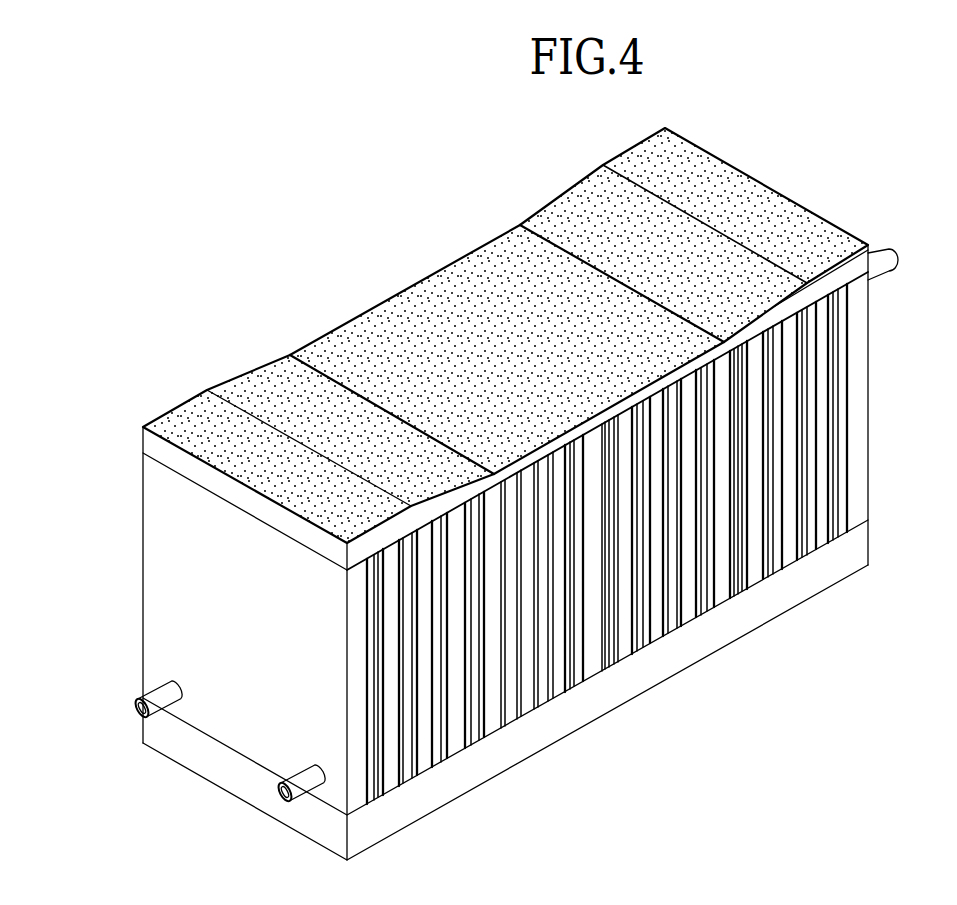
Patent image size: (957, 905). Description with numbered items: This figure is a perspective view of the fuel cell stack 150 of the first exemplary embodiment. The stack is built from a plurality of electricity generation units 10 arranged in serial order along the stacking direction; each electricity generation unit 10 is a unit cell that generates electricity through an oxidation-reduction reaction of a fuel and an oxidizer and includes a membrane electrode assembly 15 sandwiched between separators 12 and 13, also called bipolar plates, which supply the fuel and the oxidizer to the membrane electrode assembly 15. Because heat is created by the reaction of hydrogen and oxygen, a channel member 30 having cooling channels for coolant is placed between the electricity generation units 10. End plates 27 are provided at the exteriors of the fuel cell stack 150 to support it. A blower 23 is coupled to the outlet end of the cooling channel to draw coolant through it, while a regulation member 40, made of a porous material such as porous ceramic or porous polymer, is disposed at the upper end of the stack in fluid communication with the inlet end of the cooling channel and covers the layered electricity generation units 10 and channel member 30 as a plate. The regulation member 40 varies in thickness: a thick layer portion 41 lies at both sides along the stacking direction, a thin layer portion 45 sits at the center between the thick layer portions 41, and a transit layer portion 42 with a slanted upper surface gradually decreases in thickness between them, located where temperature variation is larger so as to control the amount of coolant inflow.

The fuel cell stack 150 is at (456, 206).
The electricity generation unit 10 is at (793, 696).
The separator 12 is at (677, 612).
The separator 13 is at (664, 622).
The membrane electrode assembly 15 is at (669, 618).
The blower 23 is at (487, 768).
The end plate 27 is at (870, 461).
The channel member 30 is at (624, 637).
The regulation member 40 is at (762, 170).
The thick layer portion 41 is at (252, 390).
The transit layer portion 42 is at (588, 203).
The thin layer portion 45 is at (416, 300).